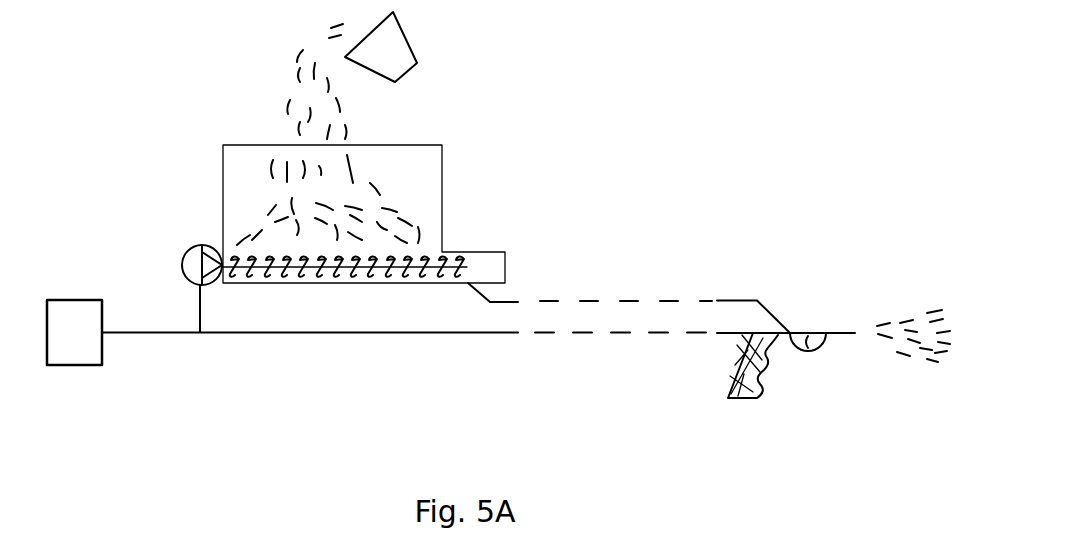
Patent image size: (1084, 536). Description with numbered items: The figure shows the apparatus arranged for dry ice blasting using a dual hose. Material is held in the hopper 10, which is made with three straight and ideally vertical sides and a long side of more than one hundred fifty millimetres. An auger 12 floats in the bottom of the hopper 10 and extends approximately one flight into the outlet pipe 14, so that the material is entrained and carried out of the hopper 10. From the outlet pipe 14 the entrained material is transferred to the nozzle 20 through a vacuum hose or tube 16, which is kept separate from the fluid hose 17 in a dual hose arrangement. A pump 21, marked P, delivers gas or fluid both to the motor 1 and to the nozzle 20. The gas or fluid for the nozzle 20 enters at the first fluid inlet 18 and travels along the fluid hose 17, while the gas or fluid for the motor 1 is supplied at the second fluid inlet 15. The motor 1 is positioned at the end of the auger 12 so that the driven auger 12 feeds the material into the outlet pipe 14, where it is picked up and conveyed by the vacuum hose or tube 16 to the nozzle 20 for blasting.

The motor 1 is at (153, 240).
The hopper 10 is at (443, 187).
The auger 12 is at (264, 294).
The outlet pipe 14 is at (496, 290).
The second fluid inlet 15 is at (180, 313).
The vacuum hose or tube 16 is at (697, 288).
The fluid hose 17 is at (392, 350).
The first fluid inlet 18 is at (693, 348).
The nozzle 20 is at (793, 392).
The pump 21 is at (76, 380).